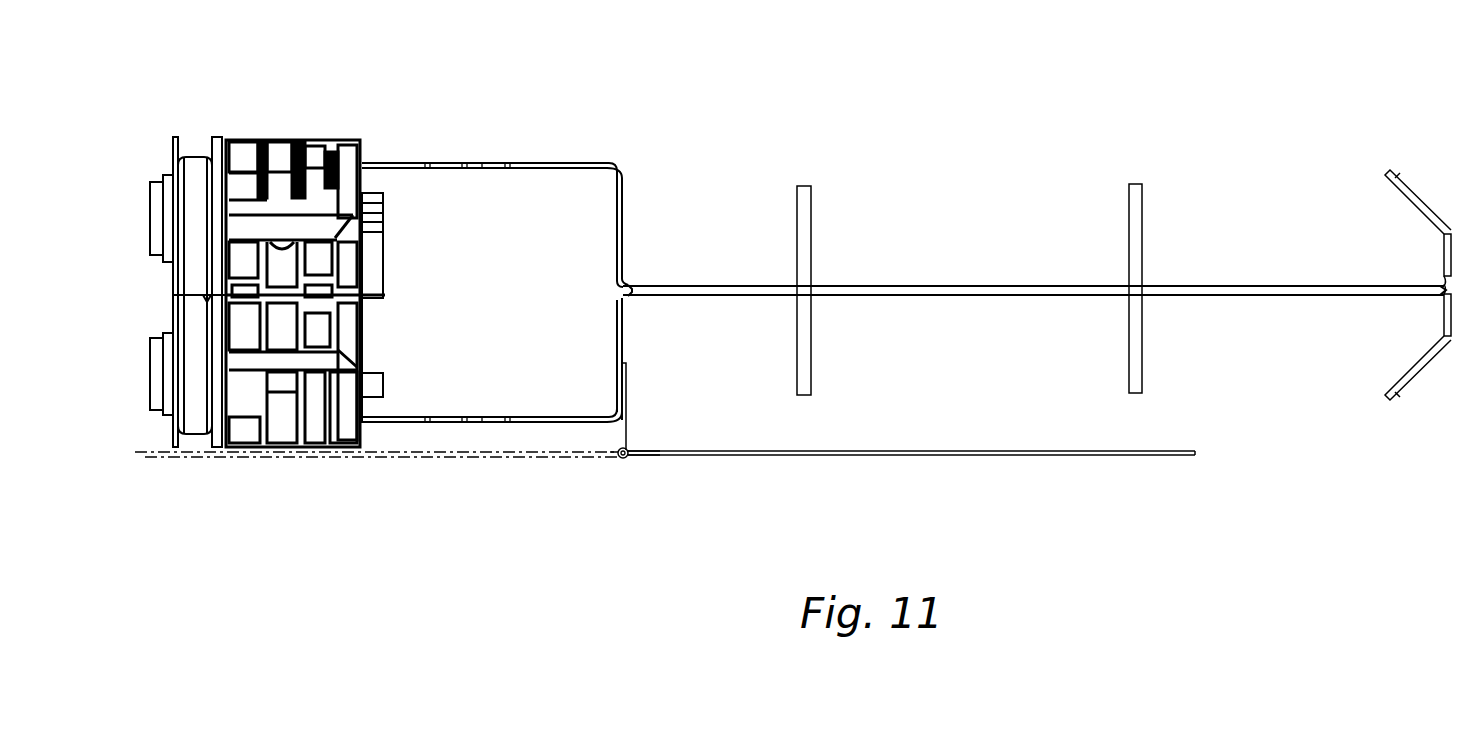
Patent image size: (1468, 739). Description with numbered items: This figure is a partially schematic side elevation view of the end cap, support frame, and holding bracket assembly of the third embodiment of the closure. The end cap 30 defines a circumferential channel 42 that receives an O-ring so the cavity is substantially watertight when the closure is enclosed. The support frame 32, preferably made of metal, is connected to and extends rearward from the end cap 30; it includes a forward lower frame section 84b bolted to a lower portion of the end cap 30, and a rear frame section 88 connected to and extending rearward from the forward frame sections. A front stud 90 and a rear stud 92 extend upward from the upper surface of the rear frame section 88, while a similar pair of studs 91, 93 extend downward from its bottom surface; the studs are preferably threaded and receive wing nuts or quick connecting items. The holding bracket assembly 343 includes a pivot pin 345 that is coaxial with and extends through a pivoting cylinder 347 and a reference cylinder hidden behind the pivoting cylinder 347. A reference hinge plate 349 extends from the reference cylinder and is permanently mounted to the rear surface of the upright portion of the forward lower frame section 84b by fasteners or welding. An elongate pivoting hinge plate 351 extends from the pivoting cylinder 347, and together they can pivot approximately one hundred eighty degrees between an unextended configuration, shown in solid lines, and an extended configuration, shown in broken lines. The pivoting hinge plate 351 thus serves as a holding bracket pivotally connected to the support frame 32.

The circumferential channel 42 is at (202, 142).
The end cap 30 is at (313, 143).
The support frame 32 is at (630, 160).
The forward lower frame section 84b is at (558, 416).
The front stud 90 is at (812, 204).
The stud 91 is at (812, 370).
The rear stud 92 is at (1128, 212).
The stud 93 is at (1128, 353).
The rear frame section 88 is at (1417, 193).
The reference hinge plate 349 is at (628, 388).
The pivot pin 345 is at (624, 459).
The pivoting cylinder 347 is at (619, 457).
The holding bracket assembly 343 is at (650, 478).
The pivoting hinge plate 351 is at (965, 448).